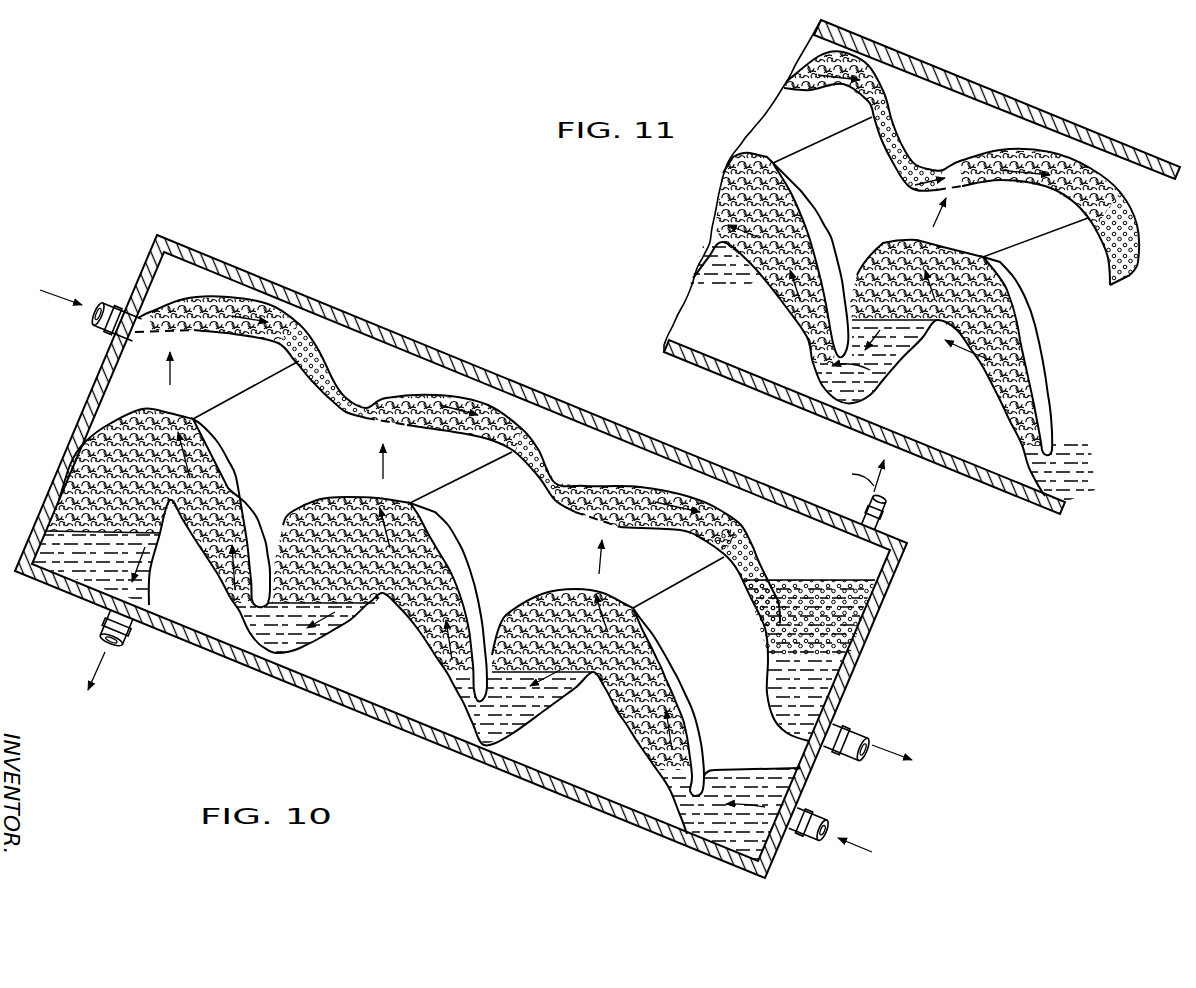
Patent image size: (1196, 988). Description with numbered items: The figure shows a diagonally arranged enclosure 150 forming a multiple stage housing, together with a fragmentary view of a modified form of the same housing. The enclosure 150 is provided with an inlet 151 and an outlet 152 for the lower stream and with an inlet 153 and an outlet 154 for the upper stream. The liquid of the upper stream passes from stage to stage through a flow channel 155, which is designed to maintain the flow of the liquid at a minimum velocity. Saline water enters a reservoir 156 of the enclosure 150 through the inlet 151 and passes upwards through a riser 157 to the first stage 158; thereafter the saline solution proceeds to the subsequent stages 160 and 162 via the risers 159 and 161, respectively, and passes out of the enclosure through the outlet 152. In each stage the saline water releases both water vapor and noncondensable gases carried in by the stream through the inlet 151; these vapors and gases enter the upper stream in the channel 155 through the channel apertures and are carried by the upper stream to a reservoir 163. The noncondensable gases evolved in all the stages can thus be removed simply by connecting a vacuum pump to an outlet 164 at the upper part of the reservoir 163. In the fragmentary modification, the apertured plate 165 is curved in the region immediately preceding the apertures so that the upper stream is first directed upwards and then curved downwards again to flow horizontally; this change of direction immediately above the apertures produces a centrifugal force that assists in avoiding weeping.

In FIG. 10, the enclosure 150 is at (880, 614).
In FIG. 11, the enclosure 150 is at (1066, 120).
In FIG. 10, the inlet 151 is at (815, 813).
In FIG. 10, the outlet 152 is at (98, 620).
In FIG. 10, the inlet 153 is at (118, 298).
In FIG. 10, the outlet 154 is at (855, 722).
In FIG. 10, the flow channel 155 is at (329, 360).
In FIG. 11, the flow channel 155 is at (903, 124).
In FIG. 10, the reservoir 156 is at (725, 640).
In FIG. 10, the riser 157 is at (655, 674).
In FIG. 10, the first stage 158 is at (532, 563).
In FIG. 10, the riser 159 is at (448, 592).
In FIG. 10, the stage 160 is at (306, 474).
In FIG. 10, the riser 161 is at (212, 516).
In FIG. 10, the stage 162 is at (151, 394).
In FIG. 10, the reservoir 163 is at (839, 567).
In FIG. 10, the outlet 164 is at (876, 512).
In FIG. 11, the apertured plate 165 is at (952, 186).